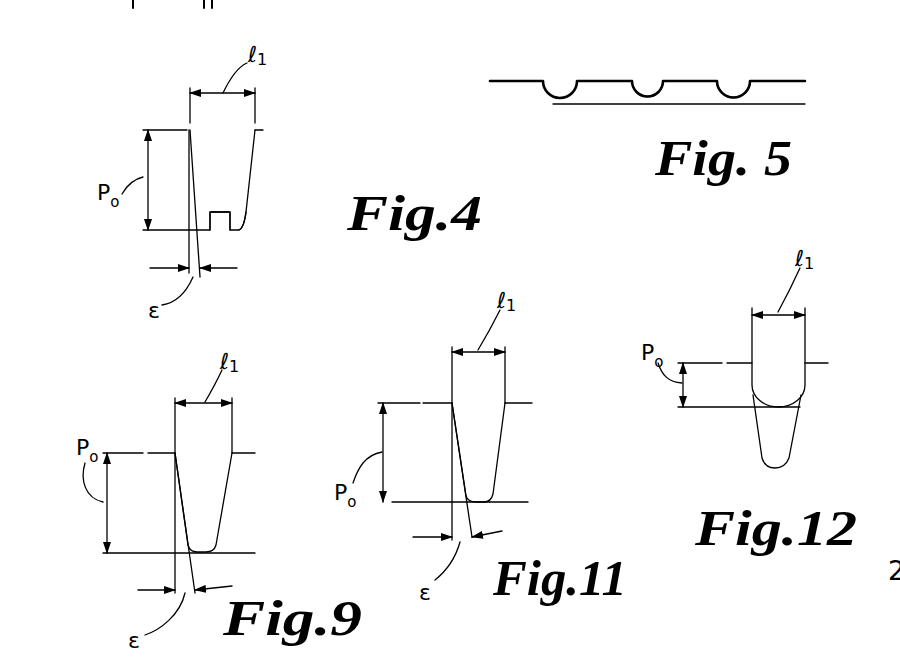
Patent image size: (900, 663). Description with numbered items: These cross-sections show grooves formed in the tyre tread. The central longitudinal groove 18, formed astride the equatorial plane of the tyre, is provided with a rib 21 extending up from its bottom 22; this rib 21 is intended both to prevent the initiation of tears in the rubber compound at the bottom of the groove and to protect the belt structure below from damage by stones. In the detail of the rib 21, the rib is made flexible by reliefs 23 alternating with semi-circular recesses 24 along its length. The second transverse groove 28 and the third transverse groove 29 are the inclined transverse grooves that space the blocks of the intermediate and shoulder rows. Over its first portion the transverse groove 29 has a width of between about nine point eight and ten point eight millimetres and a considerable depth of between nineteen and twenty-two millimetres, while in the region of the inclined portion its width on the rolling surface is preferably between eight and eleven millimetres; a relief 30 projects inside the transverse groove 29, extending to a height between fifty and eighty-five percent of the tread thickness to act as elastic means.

In FIG. 4, the central longitudinal groove 18 is at (236, 151).
In FIG. 4, the rib 21 is at (220, 218).
In FIG. 5, the rib 21 is at (591, 96).
In FIG. 4, the bottom 22 is at (244, 223).
In FIG. 5, the reliefs 23 is at (610, 90).
In FIG. 5, the semi-circular recesses 24 is at (648, 92).
In FIG. 9, the second transverse groove 28 is at (213, 479).
In FIG. 11, the third transverse groove 29 is at (483, 448).
In FIG. 12, the third transverse groove 29 is at (783, 384).
In FIG. 12, the relief 30 is at (775, 428).